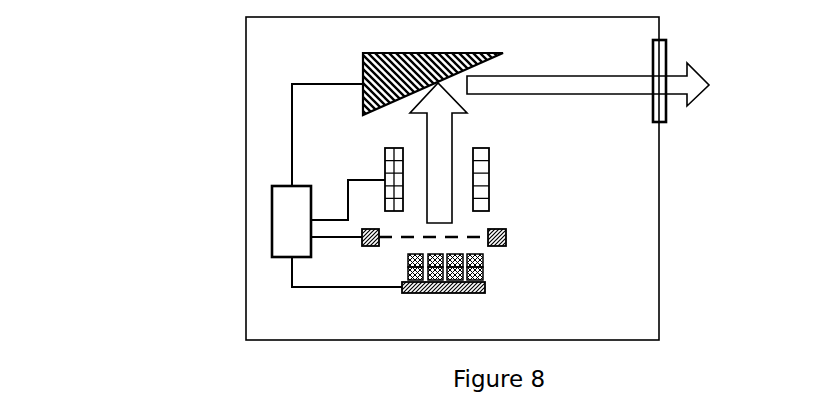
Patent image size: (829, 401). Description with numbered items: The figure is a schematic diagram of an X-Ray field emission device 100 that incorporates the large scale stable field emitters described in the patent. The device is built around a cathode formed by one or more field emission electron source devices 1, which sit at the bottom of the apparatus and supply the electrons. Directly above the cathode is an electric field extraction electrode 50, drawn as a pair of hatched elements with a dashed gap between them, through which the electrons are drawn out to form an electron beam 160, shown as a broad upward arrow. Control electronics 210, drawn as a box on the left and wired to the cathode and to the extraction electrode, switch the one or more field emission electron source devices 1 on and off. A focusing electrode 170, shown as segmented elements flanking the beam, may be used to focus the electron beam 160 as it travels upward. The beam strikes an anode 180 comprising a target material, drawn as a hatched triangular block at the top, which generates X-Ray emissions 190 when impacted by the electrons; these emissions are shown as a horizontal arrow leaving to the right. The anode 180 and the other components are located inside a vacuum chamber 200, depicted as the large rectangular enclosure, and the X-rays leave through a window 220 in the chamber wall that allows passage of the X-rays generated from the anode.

The X-Ray field emission device 100 is at (180, 58).
The vacuum chamber 200 is at (245, 140).
The control electronics 210 is at (272, 220).
The anode 180 is at (357, 72).
The electron beam 160 is at (457, 142).
The X-Ray emissions 190 is at (705, 107).
The window 220 is at (668, 51).
The focusing electrode 170 is at (499, 183).
The electric field extraction electrode 50 is at (512, 237).
The field emission electron source device 1 is at (493, 268).